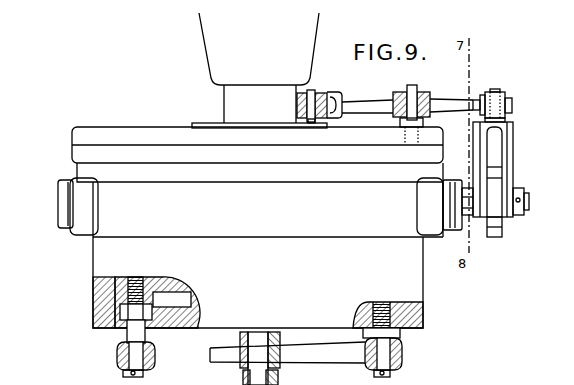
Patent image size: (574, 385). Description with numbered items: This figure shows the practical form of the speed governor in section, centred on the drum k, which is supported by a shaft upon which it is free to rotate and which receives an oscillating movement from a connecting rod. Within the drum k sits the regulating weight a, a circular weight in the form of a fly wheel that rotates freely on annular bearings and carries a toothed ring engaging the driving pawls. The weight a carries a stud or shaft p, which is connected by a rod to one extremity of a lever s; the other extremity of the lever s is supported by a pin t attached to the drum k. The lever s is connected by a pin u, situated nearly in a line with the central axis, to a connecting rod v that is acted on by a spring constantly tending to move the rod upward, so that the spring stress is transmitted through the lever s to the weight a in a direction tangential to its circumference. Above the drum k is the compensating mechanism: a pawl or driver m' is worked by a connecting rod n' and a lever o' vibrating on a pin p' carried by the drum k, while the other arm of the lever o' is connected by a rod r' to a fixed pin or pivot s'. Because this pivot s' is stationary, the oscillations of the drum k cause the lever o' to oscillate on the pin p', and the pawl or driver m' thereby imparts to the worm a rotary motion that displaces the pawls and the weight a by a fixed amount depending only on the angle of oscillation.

The drum k is at (257, 227).
The regulating weight a is at (162, 277).
The stud or shaft p is at (136, 327).
The pin t is at (454, 282).
The lever s is at (287, 354).
The fixed pin or pivot s' is at (204, 356).
The pin u is at (260, 358).
The connecting rod v is at (243, 377).
The rod r' is at (308, 106).
The pin p' is at (411, 106).
The lever o' is at (467, 101).
The connecting rod n' is at (502, 99).
The pawl or driver m' is at (508, 169).
The tongue t' is at (492, 238).